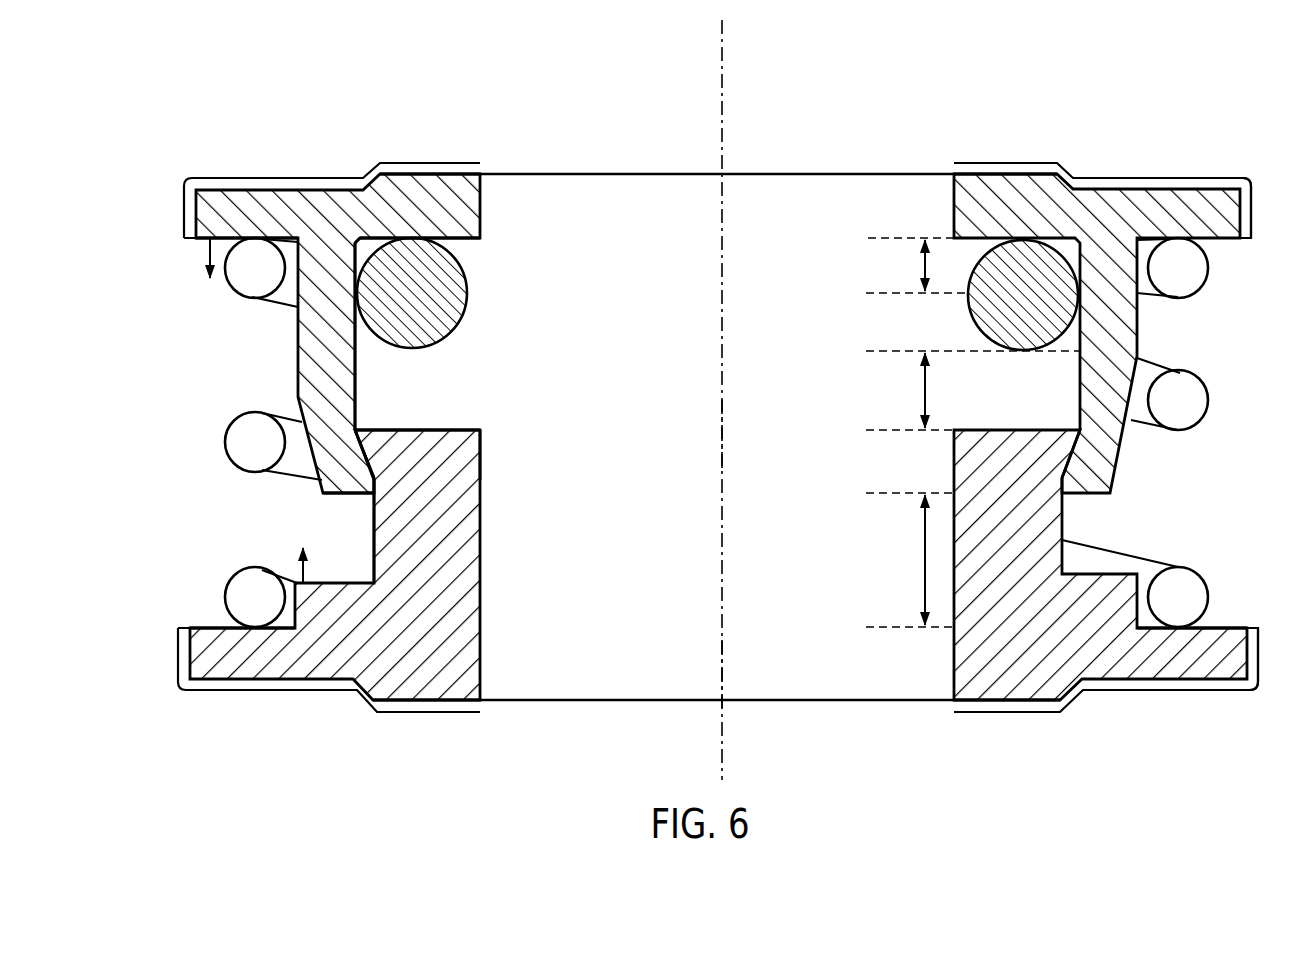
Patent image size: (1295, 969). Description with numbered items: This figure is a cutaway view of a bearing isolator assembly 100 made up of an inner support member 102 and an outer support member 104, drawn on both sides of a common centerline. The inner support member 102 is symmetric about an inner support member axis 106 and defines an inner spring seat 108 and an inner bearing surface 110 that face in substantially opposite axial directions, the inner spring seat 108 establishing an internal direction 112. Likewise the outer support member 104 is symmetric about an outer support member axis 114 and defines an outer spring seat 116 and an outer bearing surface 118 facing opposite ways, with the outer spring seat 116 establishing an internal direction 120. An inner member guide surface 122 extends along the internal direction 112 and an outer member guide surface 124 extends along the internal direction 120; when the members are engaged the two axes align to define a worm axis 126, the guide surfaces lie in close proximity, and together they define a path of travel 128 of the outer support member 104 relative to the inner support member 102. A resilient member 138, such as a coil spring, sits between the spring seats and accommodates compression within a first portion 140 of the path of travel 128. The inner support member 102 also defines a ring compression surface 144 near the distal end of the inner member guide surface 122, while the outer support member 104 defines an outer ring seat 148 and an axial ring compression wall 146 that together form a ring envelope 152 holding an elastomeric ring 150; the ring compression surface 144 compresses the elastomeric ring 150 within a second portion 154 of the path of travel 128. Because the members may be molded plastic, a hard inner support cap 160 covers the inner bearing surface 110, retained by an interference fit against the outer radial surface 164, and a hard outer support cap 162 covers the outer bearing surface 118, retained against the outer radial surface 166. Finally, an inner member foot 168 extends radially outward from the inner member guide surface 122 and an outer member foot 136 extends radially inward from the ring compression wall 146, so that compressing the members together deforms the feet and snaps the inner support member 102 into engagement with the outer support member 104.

The bearing isolator assembly 100 is at (413, 78).
The inner support member 102 is at (408, 700).
The outer support member 104 is at (396, 182).
The inner support member axis 106 is at (725, 675).
The inner spring seat 108 is at (212, 628).
The inner bearing surface 110 is at (463, 708).
The internal direction 112 is at (303, 572).
The outer support member axis 114 is at (725, 240).
The outer spring seat 116 is at (192, 238).
The outer bearing surface 118 is at (462, 175).
The internal direction 120 is at (205, 265).
The inner member guide surface 122 is at (373, 530).
The outer member guide surface 124 is at (380, 482).
The worm axis 126 is at (725, 436).
The path of travel 128 is at (922, 570).
The outer member foot 136 is at (330, 492).
The resilient member 138 is at (250, 296).
The first portion 140 is at (922, 373).
The ring compression surface 144 is at (481, 430).
The axial ring compression wall 146 is at (362, 332).
The outer ring seat 148 is at (468, 245).
The elastomeric ring 150 is at (380, 250).
The ring envelope 152 is at (490, 305).
The second portion 154 is at (922, 265).
The inner support cap 160 is at (333, 690).
The outer support cap 162 is at (272, 178).
The outer radial surface 164 is at (1250, 626).
The outer radial surface 166 is at (1243, 243).
The inner member foot 168 is at (393, 430).